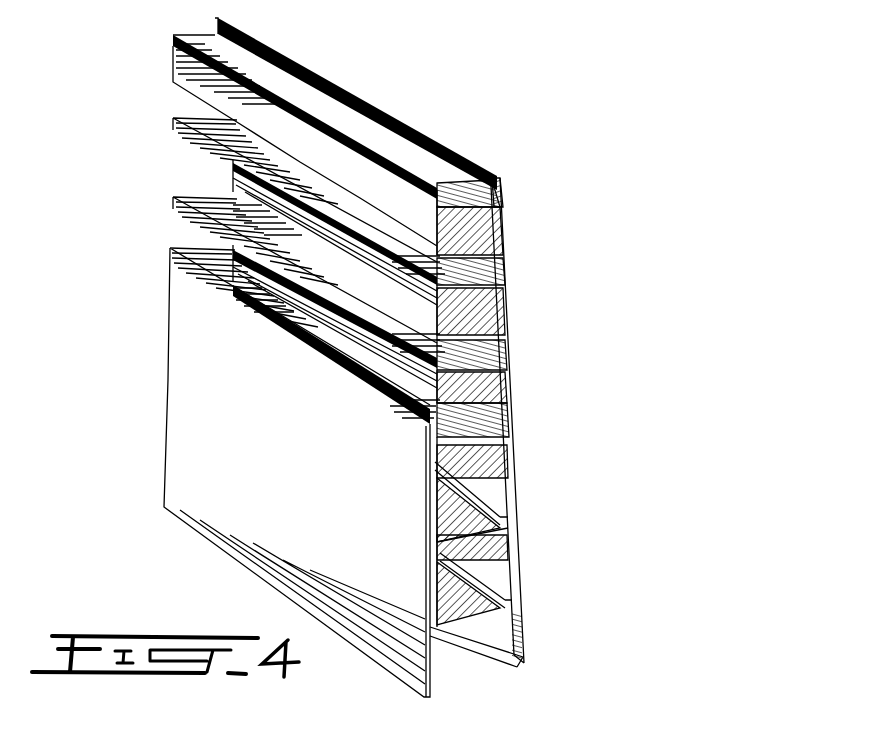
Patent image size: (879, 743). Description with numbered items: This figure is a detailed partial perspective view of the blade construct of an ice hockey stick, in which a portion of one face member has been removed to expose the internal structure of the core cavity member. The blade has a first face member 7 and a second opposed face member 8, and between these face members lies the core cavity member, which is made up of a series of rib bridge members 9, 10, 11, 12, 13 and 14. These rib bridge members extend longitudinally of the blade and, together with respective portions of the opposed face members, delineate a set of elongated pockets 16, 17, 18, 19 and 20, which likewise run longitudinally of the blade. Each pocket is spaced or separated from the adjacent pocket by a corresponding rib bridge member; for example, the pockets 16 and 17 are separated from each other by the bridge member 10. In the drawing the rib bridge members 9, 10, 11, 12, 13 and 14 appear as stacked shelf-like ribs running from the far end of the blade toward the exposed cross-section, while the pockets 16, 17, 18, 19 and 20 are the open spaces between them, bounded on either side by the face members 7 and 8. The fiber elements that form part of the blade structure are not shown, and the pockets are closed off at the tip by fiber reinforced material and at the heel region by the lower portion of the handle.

The first face member 7 is at (513, 425).
The second opposed face member 8 is at (240, 518).
The rib bridge member 9 is at (500, 190).
The rib bridge member 10 is at (497, 278).
The rib bridge member 11 is at (500, 362).
The rib bridge member 12 is at (500, 438).
The rib bridge member 13 is at (497, 517).
The rib bridge member 14 is at (500, 600).
The elongated pocket 16 is at (507, 247).
The elongated pocket 17 is at (500, 323).
The elongated pocket 18 is at (500, 393).
The elongated pocket 19 is at (507, 477).
The elongated pocket 20 is at (493, 562).